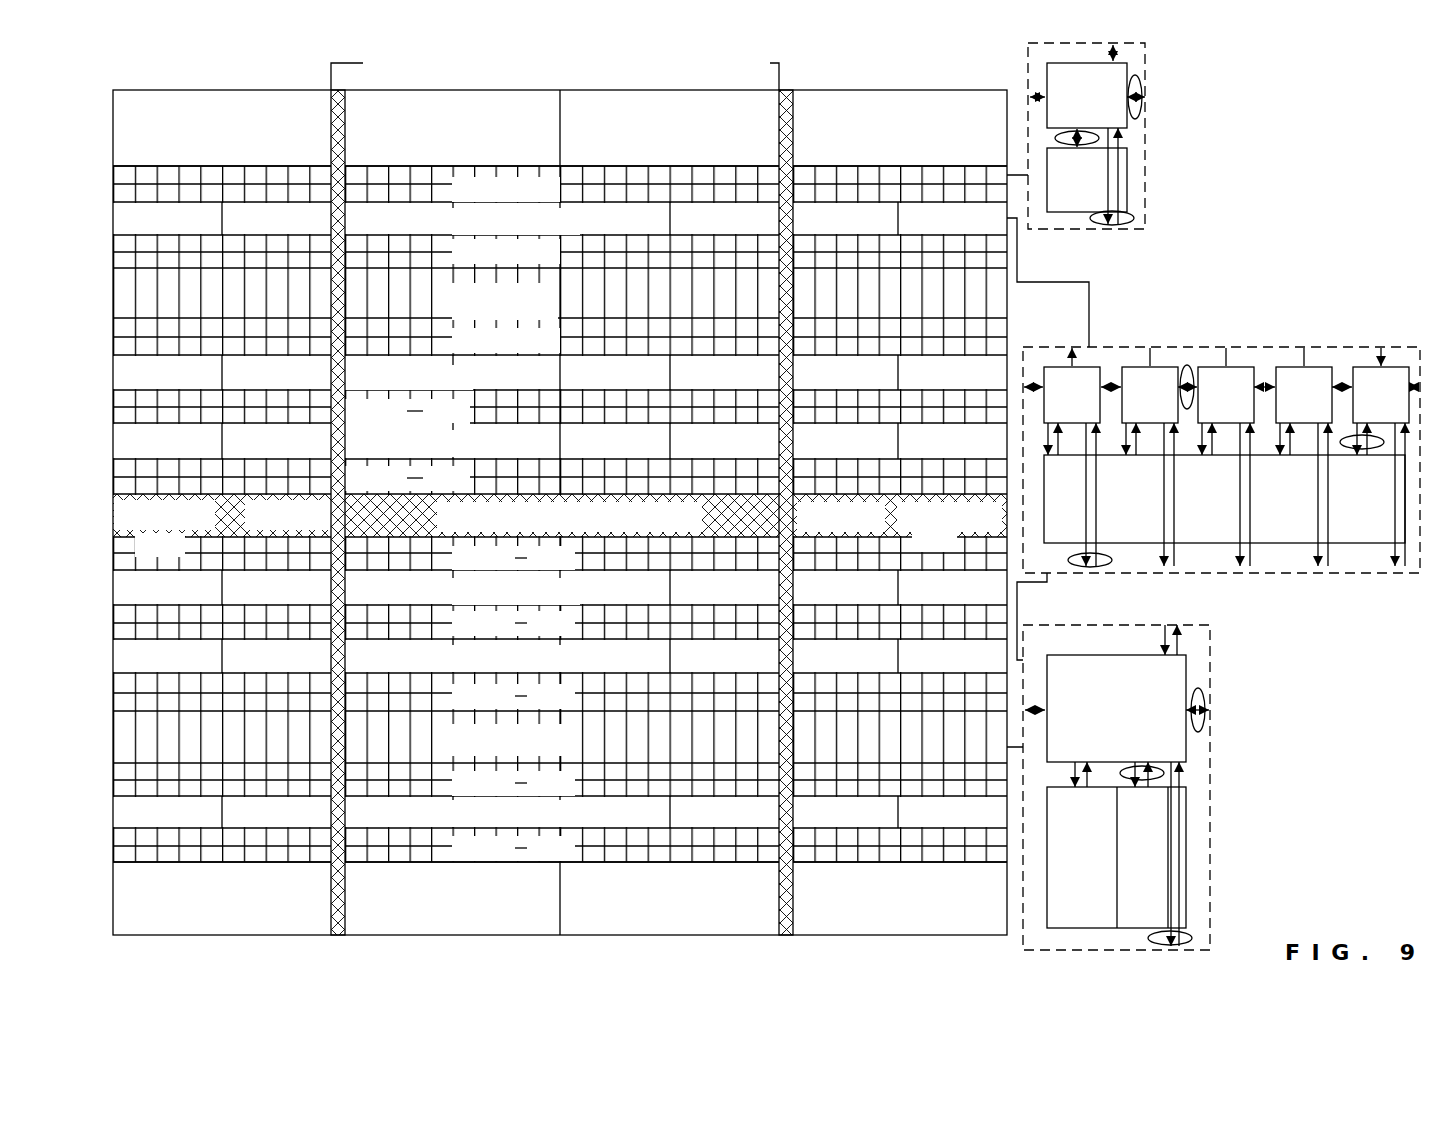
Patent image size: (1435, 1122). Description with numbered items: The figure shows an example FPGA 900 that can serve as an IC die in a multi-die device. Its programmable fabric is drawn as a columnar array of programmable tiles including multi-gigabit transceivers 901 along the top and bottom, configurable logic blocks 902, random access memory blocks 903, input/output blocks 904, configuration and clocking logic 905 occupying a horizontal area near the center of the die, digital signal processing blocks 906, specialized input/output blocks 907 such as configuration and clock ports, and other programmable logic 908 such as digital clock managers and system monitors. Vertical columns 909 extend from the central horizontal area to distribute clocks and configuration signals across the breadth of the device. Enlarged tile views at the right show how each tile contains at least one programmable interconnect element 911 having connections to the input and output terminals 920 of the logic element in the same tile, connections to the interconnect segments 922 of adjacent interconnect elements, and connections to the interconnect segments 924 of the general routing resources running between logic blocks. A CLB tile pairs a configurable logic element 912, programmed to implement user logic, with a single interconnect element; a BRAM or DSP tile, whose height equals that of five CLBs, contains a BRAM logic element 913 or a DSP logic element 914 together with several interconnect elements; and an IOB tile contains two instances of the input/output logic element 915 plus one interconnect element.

The FPGA 900 is at (1274, 71).
The multi-gigabit transceivers 901 is at (517, 144).
The configurable logic blocks 902 is at (558, 200).
The random access memory blocks 903 is at (577, 232).
The input/output blocks 904 is at (552, 307).
The configuration and clocking logic 905 is at (698, 529).
The digital signal processing blocks 906 is at (572, 669).
The specialized input/output blocks 907 is at (330, 524).
The other programmable logic 908 is at (180, 556).
The vertical columns 909 is at (763, 77).
The programmable interconnect element 911 is at (1069, 122).
The configurable logic element 912 is at (1059, 207).
The BRAM logic element 913 is at (1194, 517).
The DSP logic element 914 is at (1347, 517).
The input/output logic element 915 is at (1064, 891).
The input and output terminals 920 is at (1056, 136).
The interconnect segments 922 is at (1141, 83).
The interconnect segments 924 is at (1133, 222).